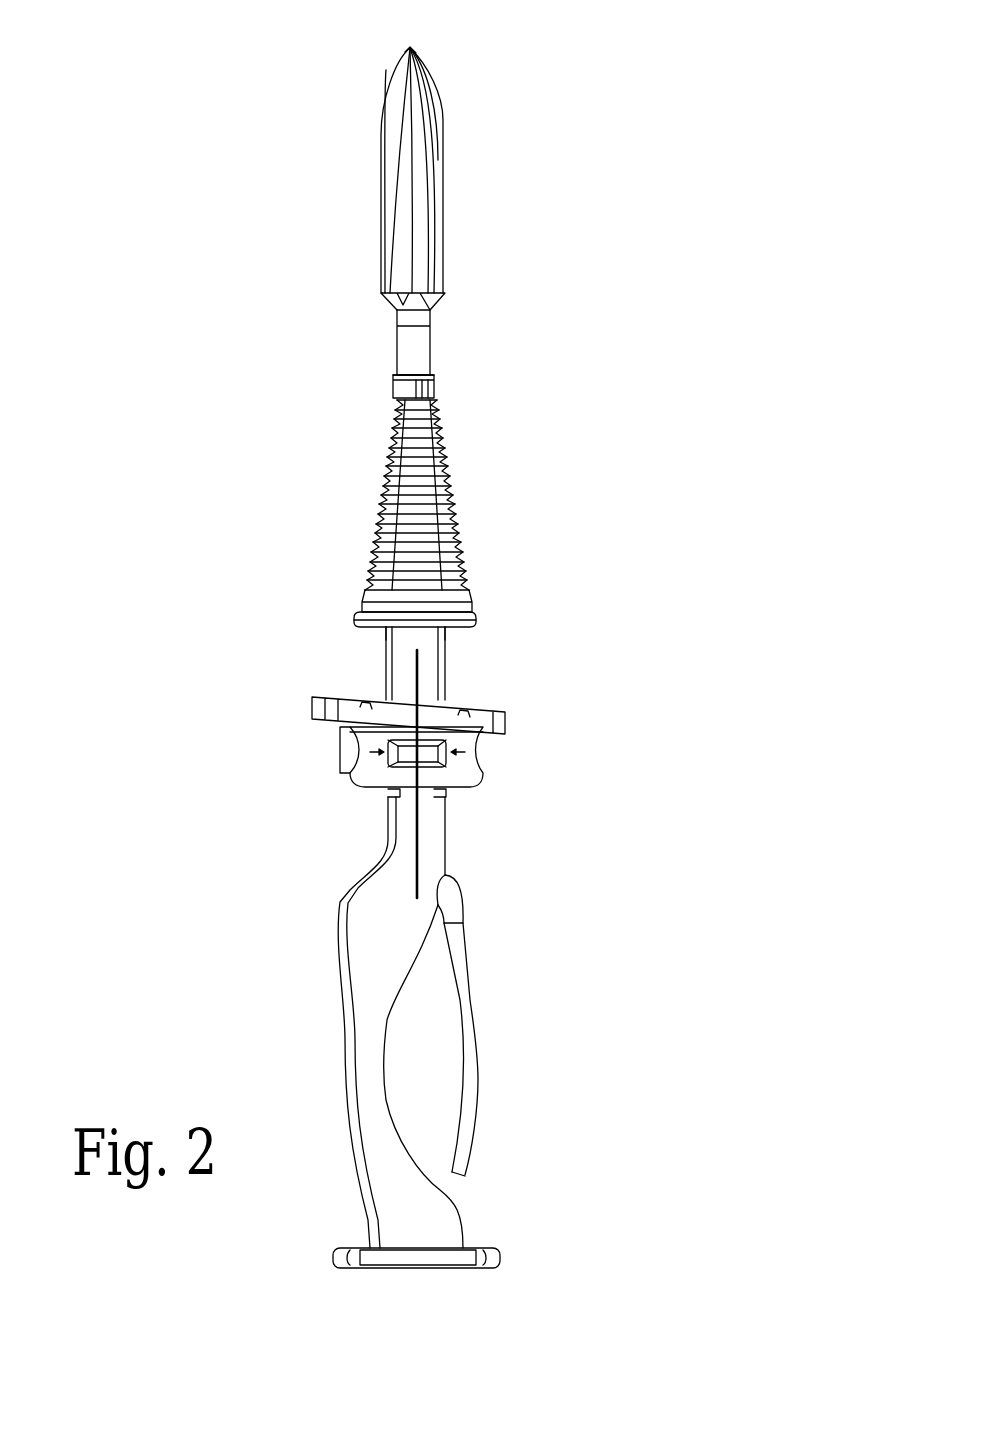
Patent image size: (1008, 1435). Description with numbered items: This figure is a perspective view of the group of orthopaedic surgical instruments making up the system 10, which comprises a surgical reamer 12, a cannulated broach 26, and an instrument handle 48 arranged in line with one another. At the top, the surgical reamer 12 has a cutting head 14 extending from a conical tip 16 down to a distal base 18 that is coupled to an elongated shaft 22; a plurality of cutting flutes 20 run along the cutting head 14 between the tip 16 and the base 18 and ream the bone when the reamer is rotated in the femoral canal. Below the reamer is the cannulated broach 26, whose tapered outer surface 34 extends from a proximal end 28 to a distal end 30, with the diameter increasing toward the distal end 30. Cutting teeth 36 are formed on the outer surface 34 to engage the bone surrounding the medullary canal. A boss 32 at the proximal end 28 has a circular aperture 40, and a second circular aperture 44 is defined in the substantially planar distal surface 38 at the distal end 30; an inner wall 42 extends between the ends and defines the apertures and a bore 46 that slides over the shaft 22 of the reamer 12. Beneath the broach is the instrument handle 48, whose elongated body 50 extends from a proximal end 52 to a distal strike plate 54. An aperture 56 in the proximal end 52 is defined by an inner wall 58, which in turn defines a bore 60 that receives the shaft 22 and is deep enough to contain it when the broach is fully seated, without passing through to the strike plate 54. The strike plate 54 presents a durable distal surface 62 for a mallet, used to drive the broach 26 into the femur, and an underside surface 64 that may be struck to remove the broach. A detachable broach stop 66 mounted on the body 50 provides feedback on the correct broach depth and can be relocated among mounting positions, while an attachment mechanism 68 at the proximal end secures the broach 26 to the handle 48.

The system 10 is at (757, 62).
The surgical reamer 12 is at (555, 138).
The cutting head 14 is at (400, 166).
The tip 16 is at (411, 48).
The distal base 18 is at (425, 295).
The cutting flutes 20 is at (412, 100).
The shaft 22 is at (418, 336).
The cannulated broach 26 is at (585, 496).
The proximal end 28 is at (543, 370).
The distal end 30 is at (552, 652).
The boss 32 is at (430, 395).
The outer surface 34 is at (400, 458).
The cutting teeth 36 is at (355, 487).
The distal surface 38 is at (355, 623).
The circular aperture 40 is at (410, 378).
The inner wall 42 is at (428, 374).
The circular aperture 44 is at (366, 614).
The bore 46 is at (413, 367).
The instrument handle 48 is at (632, 1028).
The elongated body 50 is at (440, 890).
The proximal end 52 is at (573, 681).
The distal strike plate 54 is at (495, 1262).
The aperture 56 is at (440, 627).
The inner wall 58 is at (440, 619).
The bore 60 is at (418, 612).
The distal surface 62 is at (352, 1270).
The underside surface 64 is at (500, 1248).
The broach stop 66 is at (287, 730).
The attachment mechanism 68 is at (355, 645).